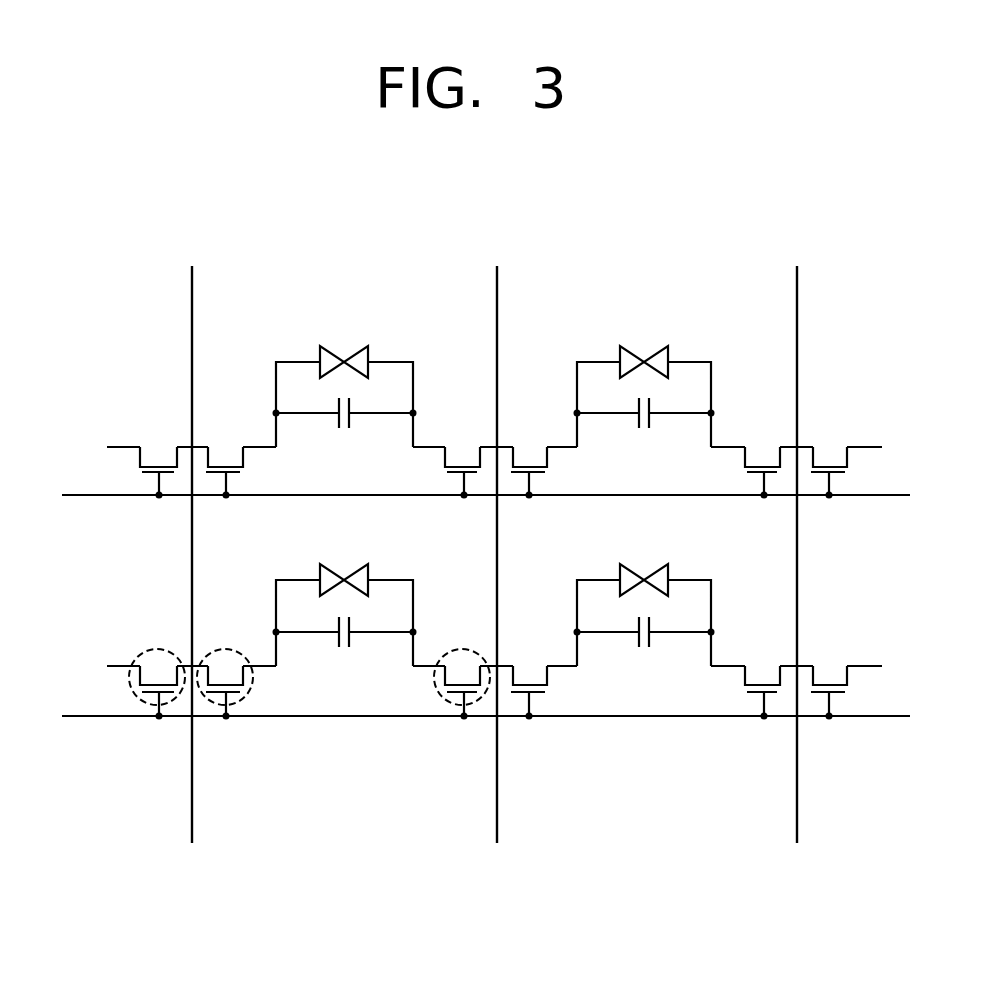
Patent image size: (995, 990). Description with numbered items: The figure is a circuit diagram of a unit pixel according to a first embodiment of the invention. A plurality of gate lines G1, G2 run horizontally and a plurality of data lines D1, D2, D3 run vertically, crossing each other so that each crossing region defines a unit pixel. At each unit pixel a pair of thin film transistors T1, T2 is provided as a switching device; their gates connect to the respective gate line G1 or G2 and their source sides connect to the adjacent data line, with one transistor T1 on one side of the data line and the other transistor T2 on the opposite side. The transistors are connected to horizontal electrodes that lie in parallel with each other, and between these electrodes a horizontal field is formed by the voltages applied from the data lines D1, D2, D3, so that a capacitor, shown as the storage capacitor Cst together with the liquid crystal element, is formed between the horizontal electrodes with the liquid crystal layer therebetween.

The data line D1 is at (193, 542).
The data line D2 is at (497, 542).
The data line D3 is at (797, 542).
The gate line G1 is at (471, 498).
The gate line G2 is at (471, 720).
The thin film transistor T1 is at (243, 703).
The thin film transistor T2 is at (138, 703).
The storage capacitor Cst is at (494, 540).